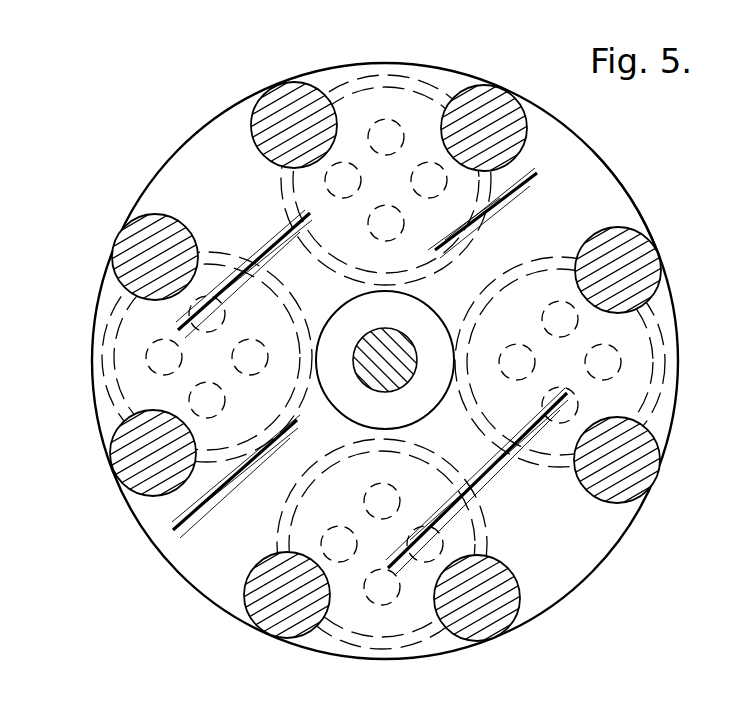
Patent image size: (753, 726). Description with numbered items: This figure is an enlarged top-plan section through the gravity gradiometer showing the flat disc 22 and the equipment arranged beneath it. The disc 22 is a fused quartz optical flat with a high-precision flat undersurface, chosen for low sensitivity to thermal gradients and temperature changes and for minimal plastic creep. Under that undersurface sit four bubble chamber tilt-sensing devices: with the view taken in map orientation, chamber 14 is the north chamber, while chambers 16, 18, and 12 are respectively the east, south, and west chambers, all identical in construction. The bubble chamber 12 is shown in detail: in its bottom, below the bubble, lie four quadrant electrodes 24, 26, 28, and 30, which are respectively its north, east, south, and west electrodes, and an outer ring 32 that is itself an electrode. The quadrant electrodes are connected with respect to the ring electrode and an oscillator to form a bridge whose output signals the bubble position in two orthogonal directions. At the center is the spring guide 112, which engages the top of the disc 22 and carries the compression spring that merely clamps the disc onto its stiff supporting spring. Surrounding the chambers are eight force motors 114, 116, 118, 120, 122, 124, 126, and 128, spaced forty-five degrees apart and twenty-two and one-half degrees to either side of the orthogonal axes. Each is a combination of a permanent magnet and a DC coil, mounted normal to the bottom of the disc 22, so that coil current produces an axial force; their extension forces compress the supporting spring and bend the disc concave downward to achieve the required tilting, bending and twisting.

The bubble chamber 12 is at (104, 406).
The bubble chamber 14 is at (428, 82).
The bubble chamber 16 is at (640, 357).
The bubble chamber 18 is at (424, 652).
The flat disc 22 is at (598, 202).
The north electrode 24 is at (223, 273).
The east electrode 26 is at (258, 338).
The south electrode 28 is at (224, 405).
The west electrode 30 is at (150, 350).
The outer ring 32 is at (105, 362).
The spring guide 112 is at (429, 318).
The force motor 114 is at (124, 229).
The force motor 116 is at (273, 100).
The force motor 118 is at (513, 138).
The force motor 120 is at (642, 267).
The force motor 122 is at (632, 471).
The force motor 124 is at (493, 630).
The force motor 126 is at (278, 630).
The force motor 128 is at (143, 487).